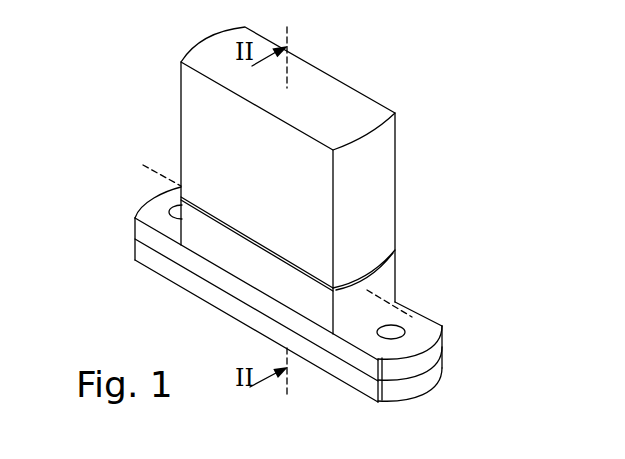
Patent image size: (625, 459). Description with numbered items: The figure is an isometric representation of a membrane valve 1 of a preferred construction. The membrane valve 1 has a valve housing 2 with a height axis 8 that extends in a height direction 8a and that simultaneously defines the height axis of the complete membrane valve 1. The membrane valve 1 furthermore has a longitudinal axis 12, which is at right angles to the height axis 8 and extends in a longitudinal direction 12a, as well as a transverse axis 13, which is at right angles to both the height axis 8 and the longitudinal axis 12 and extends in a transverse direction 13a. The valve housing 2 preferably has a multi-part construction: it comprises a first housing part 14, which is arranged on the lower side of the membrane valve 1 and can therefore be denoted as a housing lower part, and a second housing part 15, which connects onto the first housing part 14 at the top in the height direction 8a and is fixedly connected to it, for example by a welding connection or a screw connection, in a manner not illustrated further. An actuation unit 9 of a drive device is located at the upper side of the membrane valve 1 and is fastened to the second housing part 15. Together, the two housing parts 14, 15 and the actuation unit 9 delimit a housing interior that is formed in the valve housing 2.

The membrane valve 1 is at (434, 113).
The valve housing 2 is at (118, 251).
The height axis 8 is at (297, 85).
The height direction 8a is at (294, 80).
The actuation unit 9 is at (412, 178).
The longitudinal axis 12 is at (445, 290).
The longitudinal direction 12a is at (411, 318).
The transverse axis 13 is at (156, 272).
The transverse direction 13a is at (247, 265).
The first housing part 14 is at (432, 365).
The second housing part 15 is at (432, 342).